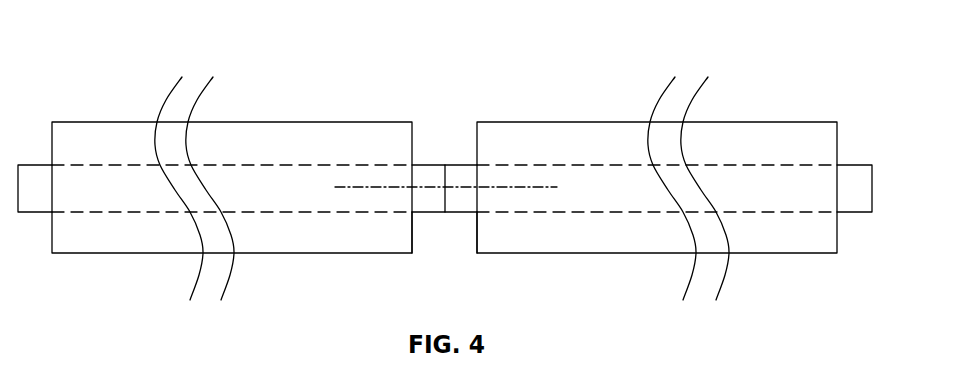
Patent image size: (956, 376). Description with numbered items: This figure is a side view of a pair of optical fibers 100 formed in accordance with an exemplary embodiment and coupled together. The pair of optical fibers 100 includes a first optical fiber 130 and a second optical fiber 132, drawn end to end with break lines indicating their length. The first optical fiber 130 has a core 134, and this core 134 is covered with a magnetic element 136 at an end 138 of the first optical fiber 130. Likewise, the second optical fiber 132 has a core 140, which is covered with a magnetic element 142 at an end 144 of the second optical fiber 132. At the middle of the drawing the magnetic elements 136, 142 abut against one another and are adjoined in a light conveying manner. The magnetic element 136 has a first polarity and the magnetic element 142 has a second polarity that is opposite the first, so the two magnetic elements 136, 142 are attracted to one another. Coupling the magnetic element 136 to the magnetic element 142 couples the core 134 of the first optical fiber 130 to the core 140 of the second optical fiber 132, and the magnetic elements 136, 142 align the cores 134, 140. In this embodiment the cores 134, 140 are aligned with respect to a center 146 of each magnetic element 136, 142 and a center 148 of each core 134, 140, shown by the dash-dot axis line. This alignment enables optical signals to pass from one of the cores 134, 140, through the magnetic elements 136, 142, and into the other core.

The pair of optical fibers 100 is at (177, 41).
The first optical fiber 130 is at (242, 121).
The second optical fiber 132 is at (740, 121).
The core 134 is at (303, 162).
The magnetic element 136 is at (433, 168).
The end 138 is at (418, 267).
The core 140 is at (595, 213).
The magnetic element 142 is at (455, 168).
The end 144 is at (470, 234).
The center 146 is at (432, 189).
The center 148 is at (335, 187).